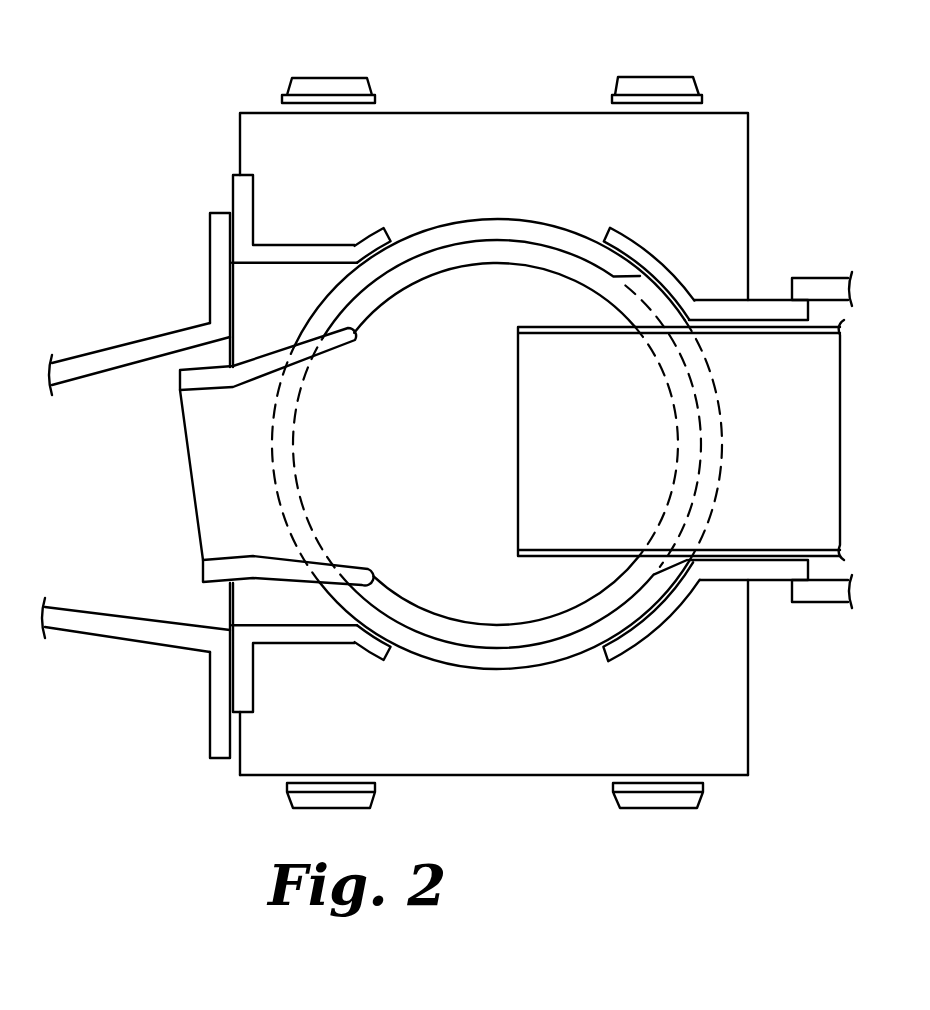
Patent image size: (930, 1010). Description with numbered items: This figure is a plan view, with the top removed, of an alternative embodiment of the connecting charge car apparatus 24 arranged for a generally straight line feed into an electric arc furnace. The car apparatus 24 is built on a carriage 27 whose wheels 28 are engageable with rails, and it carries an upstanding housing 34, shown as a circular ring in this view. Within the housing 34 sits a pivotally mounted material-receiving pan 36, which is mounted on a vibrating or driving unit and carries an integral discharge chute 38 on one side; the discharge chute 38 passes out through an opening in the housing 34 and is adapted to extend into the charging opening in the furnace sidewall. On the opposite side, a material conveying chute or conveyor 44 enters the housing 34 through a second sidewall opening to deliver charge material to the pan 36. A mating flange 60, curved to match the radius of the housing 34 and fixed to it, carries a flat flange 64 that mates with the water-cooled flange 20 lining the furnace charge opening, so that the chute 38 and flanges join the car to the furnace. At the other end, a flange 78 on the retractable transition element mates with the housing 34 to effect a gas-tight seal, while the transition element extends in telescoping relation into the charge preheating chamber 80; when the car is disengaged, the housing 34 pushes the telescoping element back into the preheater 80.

The flange 20 is at (210, 258).
The connecting charge car apparatus 24 is at (519, 98).
The carriage 27 is at (538, 736).
The wheels 28 is at (668, 808).
The housing 34 is at (547, 223).
The material-receiving pan 36 is at (458, 437).
The discharge chute 38 is at (184, 484).
The material conveying chute or conveyor 44 is at (604, 467).
The mating flange 60 is at (363, 233).
The flat flange 64 is at (255, 207).
The flange 78 is at (645, 647).
The charge preheating chamber 80 is at (827, 604).